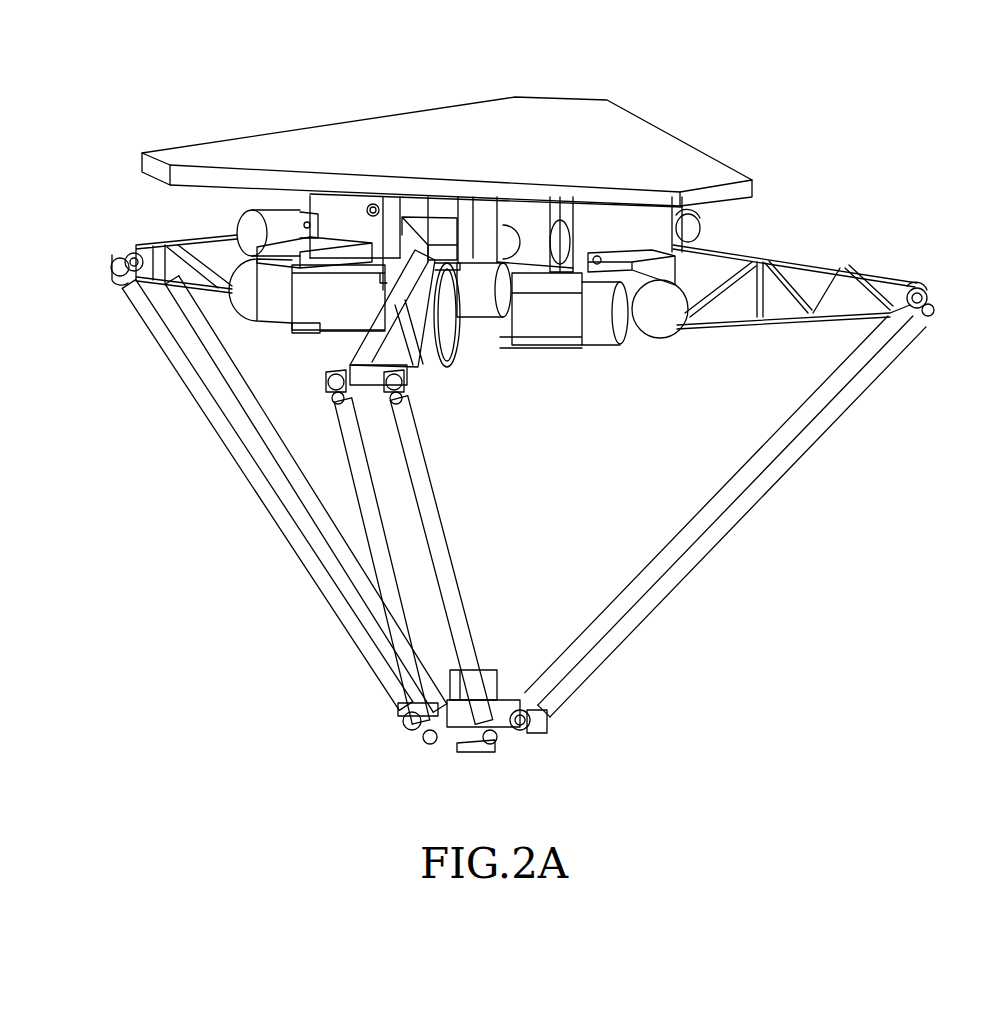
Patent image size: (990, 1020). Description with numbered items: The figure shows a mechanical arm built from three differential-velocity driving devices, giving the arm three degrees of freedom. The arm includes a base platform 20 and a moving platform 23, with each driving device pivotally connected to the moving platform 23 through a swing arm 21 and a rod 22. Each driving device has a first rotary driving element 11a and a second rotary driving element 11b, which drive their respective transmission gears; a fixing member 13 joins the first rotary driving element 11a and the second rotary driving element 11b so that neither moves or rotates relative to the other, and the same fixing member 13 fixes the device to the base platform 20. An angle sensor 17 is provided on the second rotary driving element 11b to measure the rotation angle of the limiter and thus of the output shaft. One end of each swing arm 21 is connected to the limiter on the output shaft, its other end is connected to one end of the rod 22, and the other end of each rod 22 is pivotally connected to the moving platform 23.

The base platform 20 is at (488, 123).
The fixing member 13 is at (443, 210).
The angle sensor 17 is at (482, 282).
The first rotary driving element 11a is at (317, 320).
The second rotary driving element 11b is at (546, 322).
The swing arm 21 is at (435, 358).
The rod 22 is at (442, 561).
The moving platform 23 is at (488, 757).